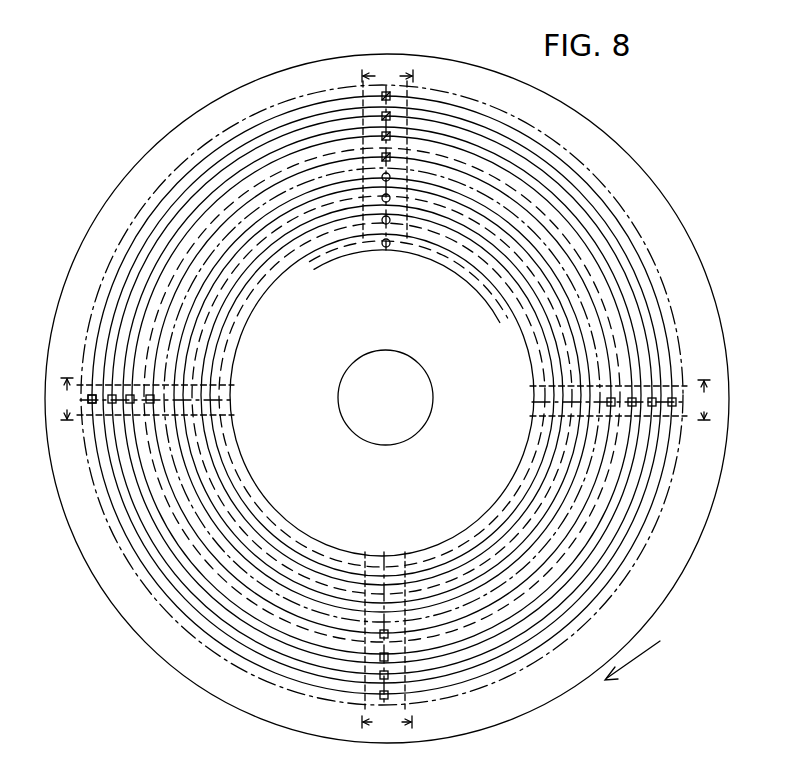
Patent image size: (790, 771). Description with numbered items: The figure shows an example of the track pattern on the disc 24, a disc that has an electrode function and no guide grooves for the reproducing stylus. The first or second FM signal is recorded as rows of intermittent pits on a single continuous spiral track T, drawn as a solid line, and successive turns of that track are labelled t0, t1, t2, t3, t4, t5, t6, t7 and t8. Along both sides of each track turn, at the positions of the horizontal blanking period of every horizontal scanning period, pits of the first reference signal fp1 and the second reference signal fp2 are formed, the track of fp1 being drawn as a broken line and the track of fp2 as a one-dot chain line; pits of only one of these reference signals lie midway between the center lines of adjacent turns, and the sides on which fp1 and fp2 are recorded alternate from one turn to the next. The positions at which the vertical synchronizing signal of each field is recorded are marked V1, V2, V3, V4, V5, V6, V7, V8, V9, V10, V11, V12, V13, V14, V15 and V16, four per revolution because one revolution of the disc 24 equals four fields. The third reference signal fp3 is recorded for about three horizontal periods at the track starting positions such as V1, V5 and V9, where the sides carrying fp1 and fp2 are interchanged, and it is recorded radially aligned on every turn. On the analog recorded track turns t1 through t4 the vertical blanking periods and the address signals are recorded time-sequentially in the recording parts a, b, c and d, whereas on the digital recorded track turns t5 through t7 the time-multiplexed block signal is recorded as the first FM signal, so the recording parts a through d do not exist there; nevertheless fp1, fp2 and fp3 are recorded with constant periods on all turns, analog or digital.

The disc 24 is at (628, 176).
The spiral track T is at (203, 168).
The track 0 t0 is at (488, 117).
The track turn t1 is at (303, 118).
The track turn t2 is at (345, 118).
The track turn t3 is at (268, 162).
The track turn t4 is at (205, 236).
The digital recorded track turn t5 is at (250, 252).
The digital recorded track turn t6 is at (238, 274).
The digital recorded track turn t7 is at (224, 300).
The track turn t8 is at (310, 262).
The first reference signal fp1 is at (114, 249).
The second reference signal fp2 is at (126, 285).
The third reference signal fp3 is at (381, 86).
The vertical synchronizing signal position V1 is at (391, 96).
The vertical synchronizing signal position V2 is at (92, 403).
The vertical synchronizing signal position V3 is at (383, 698).
The vertical synchronizing signal position V4 is at (672, 406).
The vertical synchronizing signal position V5 is at (391, 116).
The vertical synchronizing signal position V6 is at (112, 403).
The vertical synchronizing signal position V7 is at (383, 677).
The vertical synchronizing signal position V8 is at (632, 406).
The vertical synchronizing signal position V9 is at (392, 136).
The vertical synchronizing signal position V10 is at (91, 395).
The vertical synchronizing signal position V11 is at (384, 630).
The vertical synchronizing signal position V12 is at (652, 398).
The vertical synchronizing signal position V13 is at (392, 157).
The vertical synchronizing signal position V14 is at (150, 403).
The vertical synchronizing signal position V15 is at (384, 653).
The vertical synchronizing signal position V16 is at (611, 398).
The recording part a is at (387, 75).
The recording part b is at (64, 399).
The recording part c is at (387, 722).
The recording part d is at (703, 400).